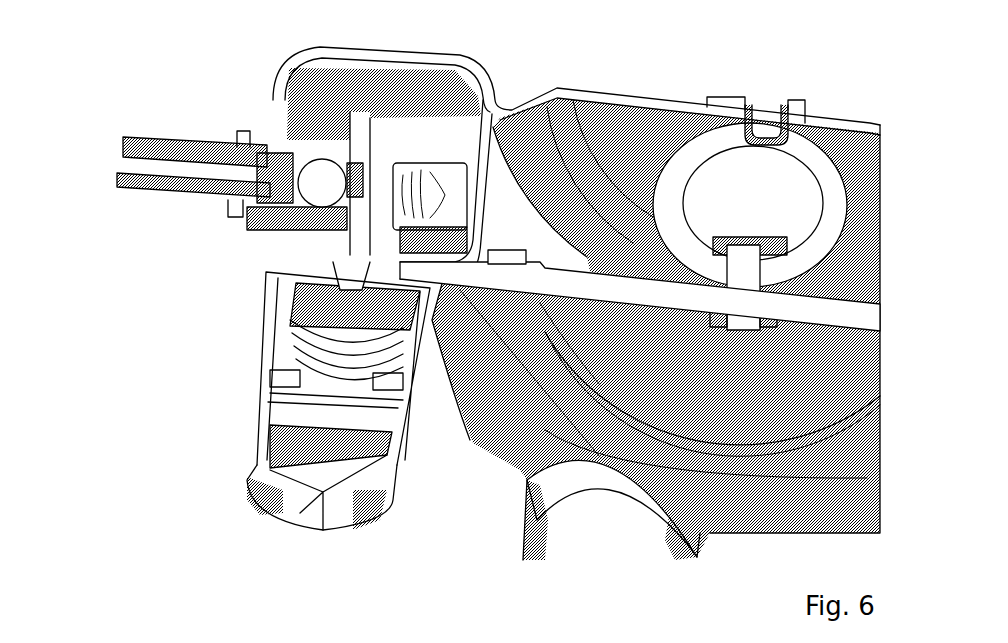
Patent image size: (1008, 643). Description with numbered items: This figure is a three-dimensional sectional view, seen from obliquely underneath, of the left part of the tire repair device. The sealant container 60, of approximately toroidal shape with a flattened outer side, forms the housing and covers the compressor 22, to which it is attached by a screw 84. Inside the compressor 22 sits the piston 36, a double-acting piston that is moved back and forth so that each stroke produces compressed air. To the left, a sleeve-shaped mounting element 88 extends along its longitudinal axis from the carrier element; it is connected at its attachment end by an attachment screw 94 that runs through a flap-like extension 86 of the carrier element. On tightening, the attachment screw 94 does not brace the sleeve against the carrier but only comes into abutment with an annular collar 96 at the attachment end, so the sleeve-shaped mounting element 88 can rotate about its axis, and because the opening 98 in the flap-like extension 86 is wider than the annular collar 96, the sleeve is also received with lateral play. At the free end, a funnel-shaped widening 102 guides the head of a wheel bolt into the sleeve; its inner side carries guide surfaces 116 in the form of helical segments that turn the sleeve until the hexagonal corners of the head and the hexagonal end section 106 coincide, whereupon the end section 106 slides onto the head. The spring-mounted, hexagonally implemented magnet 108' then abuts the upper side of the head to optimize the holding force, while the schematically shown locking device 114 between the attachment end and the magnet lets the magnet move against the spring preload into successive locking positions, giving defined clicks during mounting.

The sealant container 60 is at (552, 100).
The compressor 22 is at (707, 157).
The screw 84 is at (760, 133).
The piston 36 is at (770, 207).
The attachment screw 94 is at (300, 242).
The flap-like extension 86 is at (277, 258).
The opening 98 is at (338, 270).
The sleeve-shaped mounting element 88 is at (265, 345).
The locking device 114 is at (262, 373).
The end section 106 is at (253, 427).
The funnel-shaped widening 102 is at (253, 467).
The guide surfaces 116 is at (277, 497).
The magnet 108' is at (364, 452).
The annular collar 96 is at (365, 272).